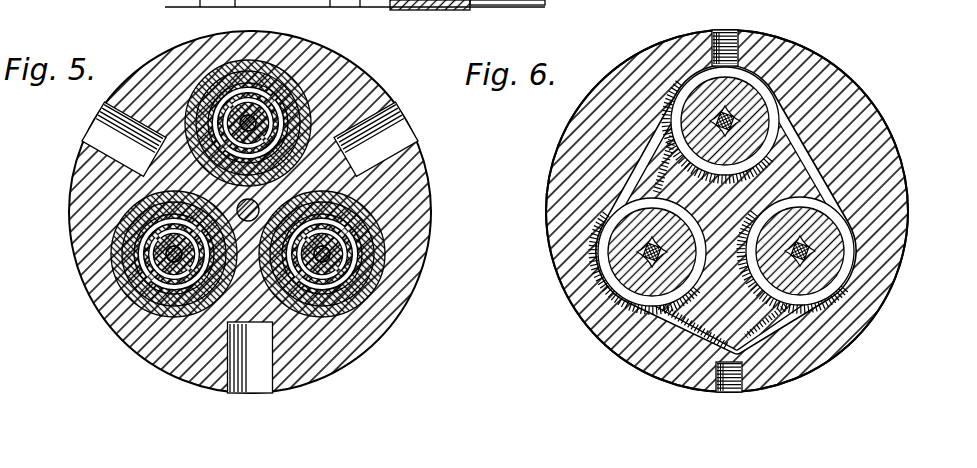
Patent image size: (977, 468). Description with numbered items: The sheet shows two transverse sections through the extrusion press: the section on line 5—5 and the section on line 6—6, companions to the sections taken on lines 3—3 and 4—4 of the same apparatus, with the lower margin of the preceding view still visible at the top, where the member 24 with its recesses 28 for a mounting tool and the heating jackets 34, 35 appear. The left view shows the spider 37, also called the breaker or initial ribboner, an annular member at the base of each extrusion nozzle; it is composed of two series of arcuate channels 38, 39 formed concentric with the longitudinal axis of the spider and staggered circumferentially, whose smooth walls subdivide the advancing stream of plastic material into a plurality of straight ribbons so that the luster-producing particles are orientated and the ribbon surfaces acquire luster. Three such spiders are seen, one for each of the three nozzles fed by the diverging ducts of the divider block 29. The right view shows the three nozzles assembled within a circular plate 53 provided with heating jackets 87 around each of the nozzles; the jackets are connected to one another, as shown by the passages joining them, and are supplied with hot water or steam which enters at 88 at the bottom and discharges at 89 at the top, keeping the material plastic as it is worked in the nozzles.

In FIG. 5, the member 24 is at (80, 10).
In FIG. 5, the recesses 28 is at (186, 0).
In FIG. 5, the jacket 34 is at (262, 0).
In FIG. 5, the section line 3— 3 is at (295, 0).
In FIG. 5, the jacket 35 is at (406, 12).
In FIG. 5, the section line 4— 4 is at (430, 0).
In FIG. 5, the section line 5— 5 is at (495, 0).
In FIG. 5, the spider 37 is at (250, 247).
In FIG. 5, the arcuate channels 38 is at (150, 70).
In FIG. 5, the arcuate channels 39 is at (265, 112).
In FIG. 6, the section line 6— 6 is at (653, 2).
In FIG. 6, the discharge 89 is at (768, 24).
In FIG. 6, the circular plate 53 is at (888, 252).
In FIG. 6, the divider block 29 is at (872, 128).
In FIG. 6, the heating jackets 87 is at (800, 72).
In FIG. 6, the entry 88 is at (722, 390).